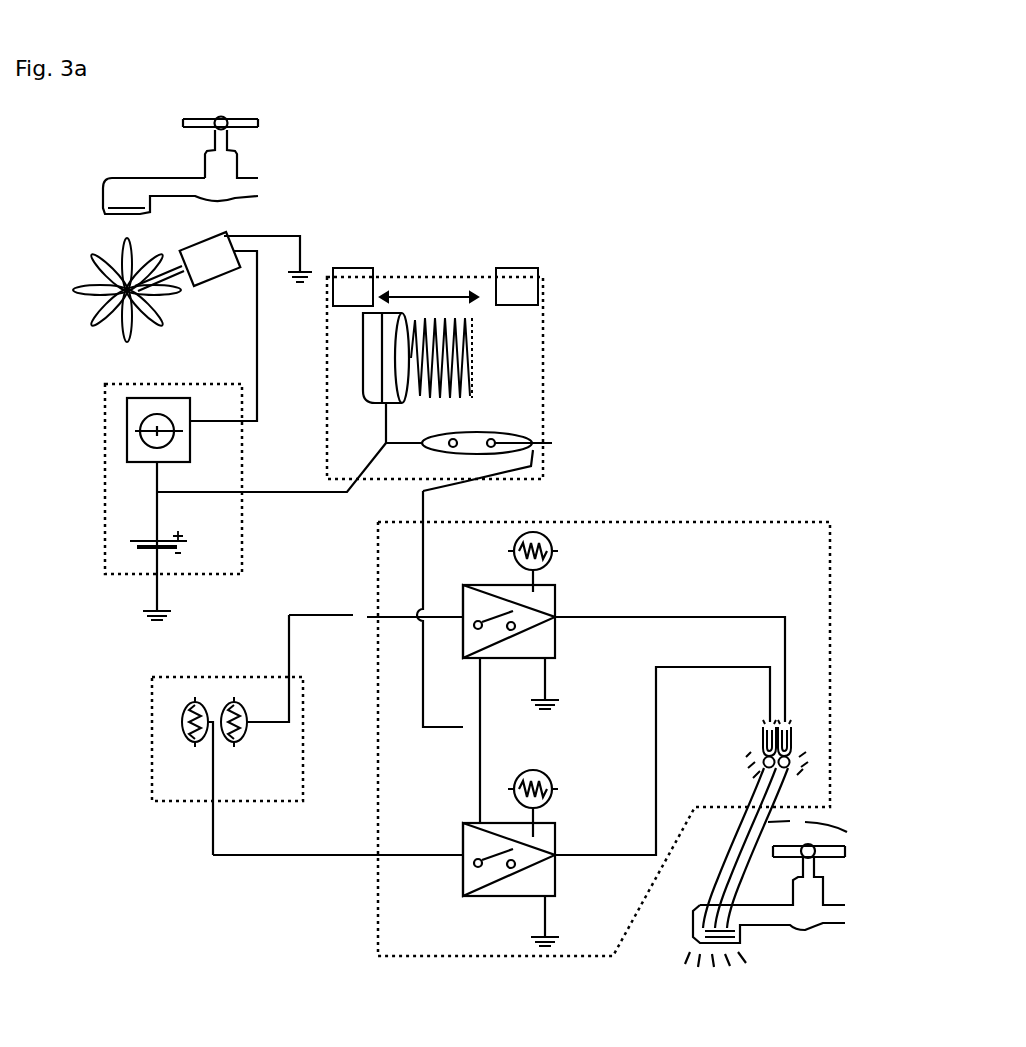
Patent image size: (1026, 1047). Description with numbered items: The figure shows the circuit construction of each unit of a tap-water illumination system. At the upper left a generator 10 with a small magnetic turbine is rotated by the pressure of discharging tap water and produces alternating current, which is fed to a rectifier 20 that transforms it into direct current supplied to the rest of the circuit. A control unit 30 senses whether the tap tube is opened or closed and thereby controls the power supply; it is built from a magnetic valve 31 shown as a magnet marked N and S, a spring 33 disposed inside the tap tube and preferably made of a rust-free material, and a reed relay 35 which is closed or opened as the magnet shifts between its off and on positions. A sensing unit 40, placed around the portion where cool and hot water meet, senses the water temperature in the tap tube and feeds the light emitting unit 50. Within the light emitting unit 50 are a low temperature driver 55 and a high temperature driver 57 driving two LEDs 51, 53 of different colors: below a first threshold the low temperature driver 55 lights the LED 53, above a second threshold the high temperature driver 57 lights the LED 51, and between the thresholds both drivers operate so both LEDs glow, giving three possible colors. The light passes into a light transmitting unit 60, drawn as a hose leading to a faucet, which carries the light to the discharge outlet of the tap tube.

The generator 10 is at (85, 262).
The rectifier 20 is at (100, 467).
The control unit 30 is at (543, 340).
The magnetic valve 31 is at (378, 310).
The spring 33 is at (430, 330).
The reed relay 35 is at (532, 438).
The sensing unit 40 is at (150, 740).
The light emitting unit 50 is at (830, 686).
The LED 51 is at (776, 722).
The LED 53 is at (796, 743).
The low temperature driver 55 is at (547, 584).
The high temperature driver 57 is at (480, 897).
The light transmitting unit 60 is at (797, 867).